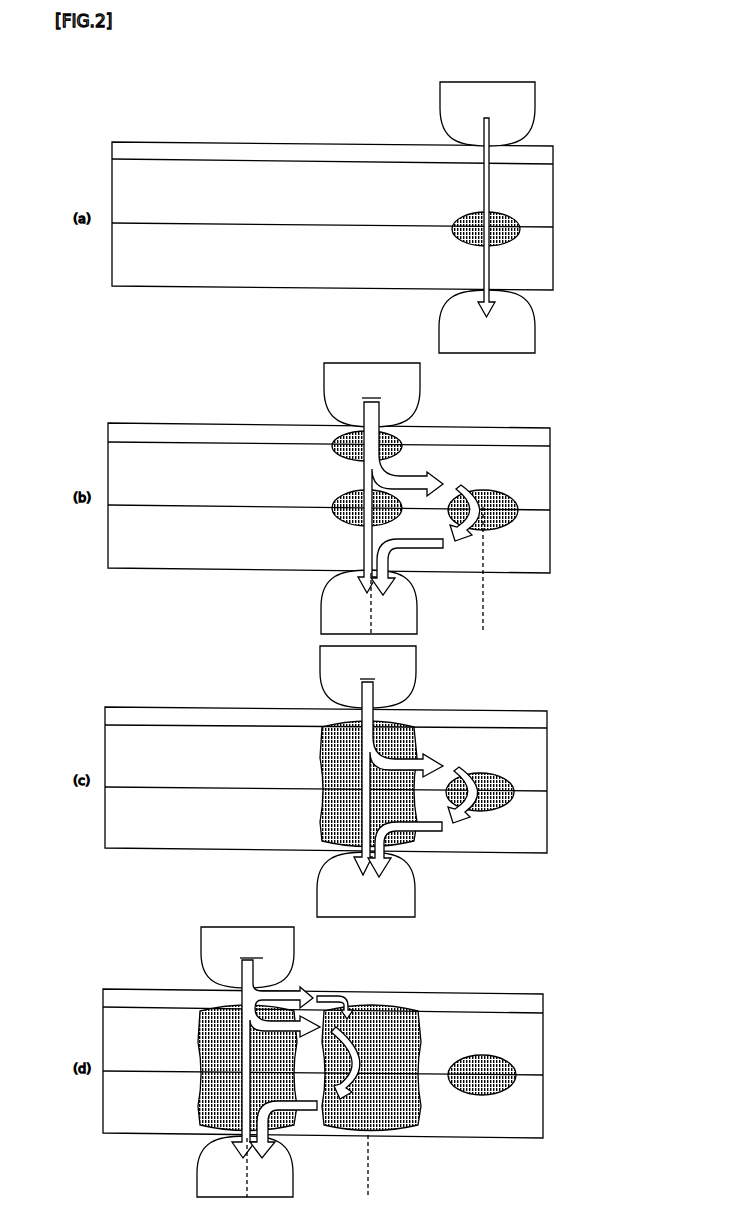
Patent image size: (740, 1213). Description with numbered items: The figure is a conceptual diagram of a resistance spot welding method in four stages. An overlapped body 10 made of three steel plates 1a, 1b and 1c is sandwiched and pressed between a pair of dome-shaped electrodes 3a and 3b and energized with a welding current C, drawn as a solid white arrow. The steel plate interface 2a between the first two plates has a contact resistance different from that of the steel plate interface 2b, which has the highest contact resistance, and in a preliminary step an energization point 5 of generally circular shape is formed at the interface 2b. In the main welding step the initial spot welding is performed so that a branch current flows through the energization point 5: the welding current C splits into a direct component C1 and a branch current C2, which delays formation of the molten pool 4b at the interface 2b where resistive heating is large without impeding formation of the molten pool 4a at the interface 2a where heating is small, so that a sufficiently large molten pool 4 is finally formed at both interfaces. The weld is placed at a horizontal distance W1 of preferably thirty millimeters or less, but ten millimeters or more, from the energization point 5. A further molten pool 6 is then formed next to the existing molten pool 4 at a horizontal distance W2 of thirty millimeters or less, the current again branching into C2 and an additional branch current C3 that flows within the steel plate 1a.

The overlapped body 10 is at (359, 611).
The steel plate 1a is at (145, 144).
The steel plate 1b is at (547, 199).
The steel plate 1c is at (548, 271).
The steel plate interface 2a is at (556, 164).
The steel plate interface 2b is at (556, 230).
The dome-shaped electrode 3a is at (532, 98).
The dome-shaped electrode 3b is at (530, 337).
The molten pool 4 is at (330, 722).
The molten pool 4a is at (343, 437).
The molten pool 4b is at (345, 522).
The energization point 5 is at (467, 220).
The molten pool 6 is at (207, 1005).
The welding current C is at (487, 274).
The welding current component C1 is at (367, 477).
The branch current C2 is at (387, 475).
The branch current C3 is at (323, 993).
The horizontal distance W1 is at (373, 615).
The horizontal distance W2 is at (249, 1178).